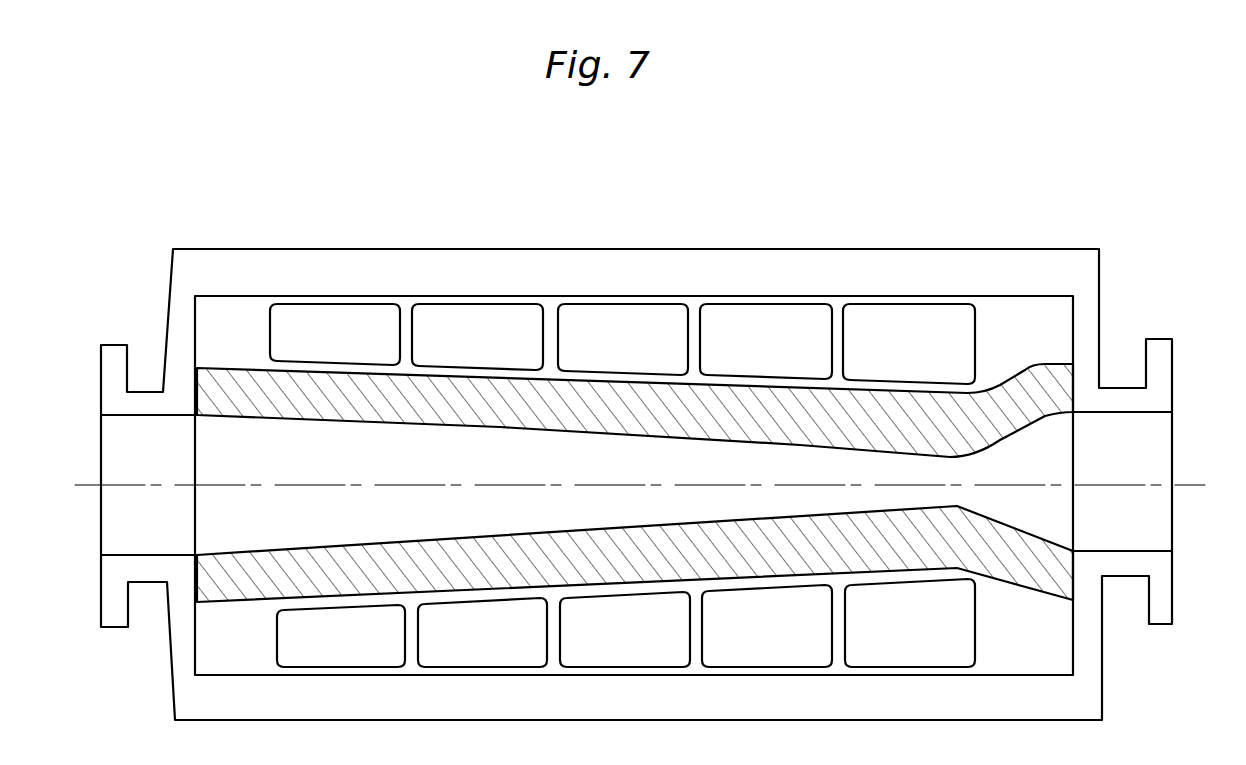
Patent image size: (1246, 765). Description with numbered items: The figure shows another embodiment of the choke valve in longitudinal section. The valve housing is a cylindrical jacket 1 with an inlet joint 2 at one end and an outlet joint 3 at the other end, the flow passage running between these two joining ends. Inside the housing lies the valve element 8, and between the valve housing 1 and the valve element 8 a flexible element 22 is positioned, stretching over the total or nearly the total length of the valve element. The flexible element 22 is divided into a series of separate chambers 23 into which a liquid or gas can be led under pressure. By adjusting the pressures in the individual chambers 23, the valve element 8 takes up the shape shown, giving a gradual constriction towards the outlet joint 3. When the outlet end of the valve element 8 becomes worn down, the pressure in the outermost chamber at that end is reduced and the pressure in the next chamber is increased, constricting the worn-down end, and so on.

The cylindrical jacket 1 is at (272, 249).
The inlet joint 2 is at (130, 453).
The outlet joint 3 is at (1145, 448).
The valve element 8 is at (437, 385).
The flexible element 22 is at (693, 305).
The separate chambers 23 is at (898, 335).